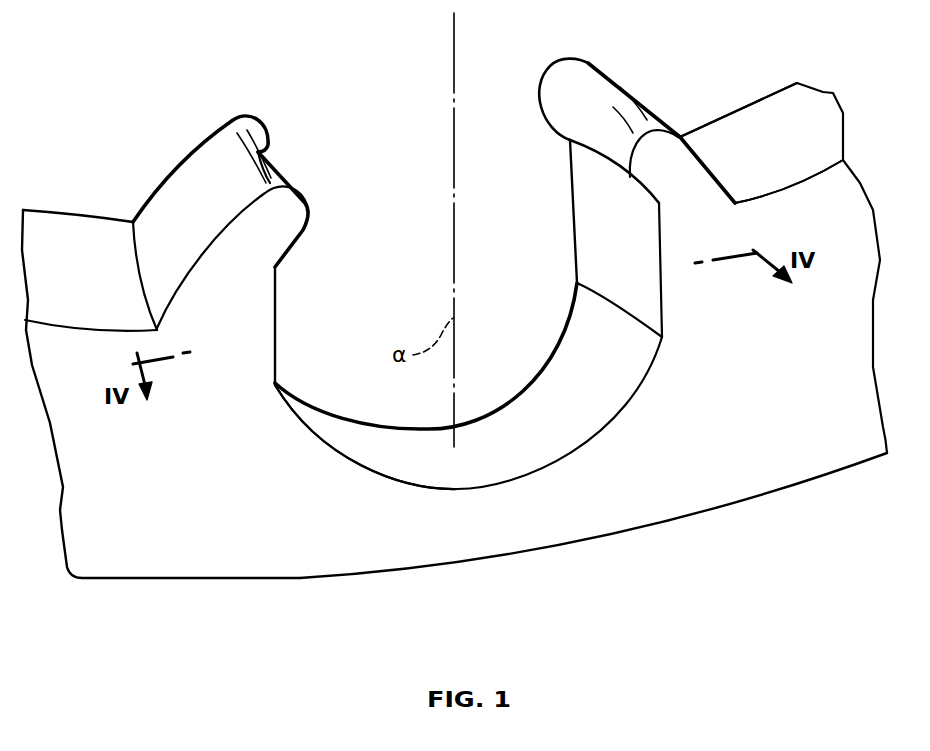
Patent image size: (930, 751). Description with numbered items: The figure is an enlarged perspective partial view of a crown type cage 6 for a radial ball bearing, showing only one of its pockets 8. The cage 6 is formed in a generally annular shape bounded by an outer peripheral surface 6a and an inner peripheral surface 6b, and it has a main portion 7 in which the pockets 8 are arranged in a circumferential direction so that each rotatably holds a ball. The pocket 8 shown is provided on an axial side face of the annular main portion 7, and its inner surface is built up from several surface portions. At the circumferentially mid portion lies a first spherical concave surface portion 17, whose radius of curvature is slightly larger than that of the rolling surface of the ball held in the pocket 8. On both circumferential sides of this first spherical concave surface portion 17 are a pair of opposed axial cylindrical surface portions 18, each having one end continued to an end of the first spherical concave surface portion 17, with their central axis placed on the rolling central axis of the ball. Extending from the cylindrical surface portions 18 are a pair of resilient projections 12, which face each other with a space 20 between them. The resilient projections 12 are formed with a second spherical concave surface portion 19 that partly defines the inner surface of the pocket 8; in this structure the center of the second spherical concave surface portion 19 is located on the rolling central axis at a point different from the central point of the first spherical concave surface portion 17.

The cage 6 is at (680, 100).
The outer peripheral surface 6a is at (739, 377).
The inner peripheral surface 6b is at (547, 350).
The main portion 7 is at (277, 560).
The pocket 8 is at (390, 462).
The resilient projection 12 is at (208, 152).
The first spherical concave surface portion 17 is at (517, 470).
The axial cylindrical surface portion 18 is at (275, 320).
The second spherical concave surface portion 19 is at (302, 236).
The space 20 is at (360, 181).